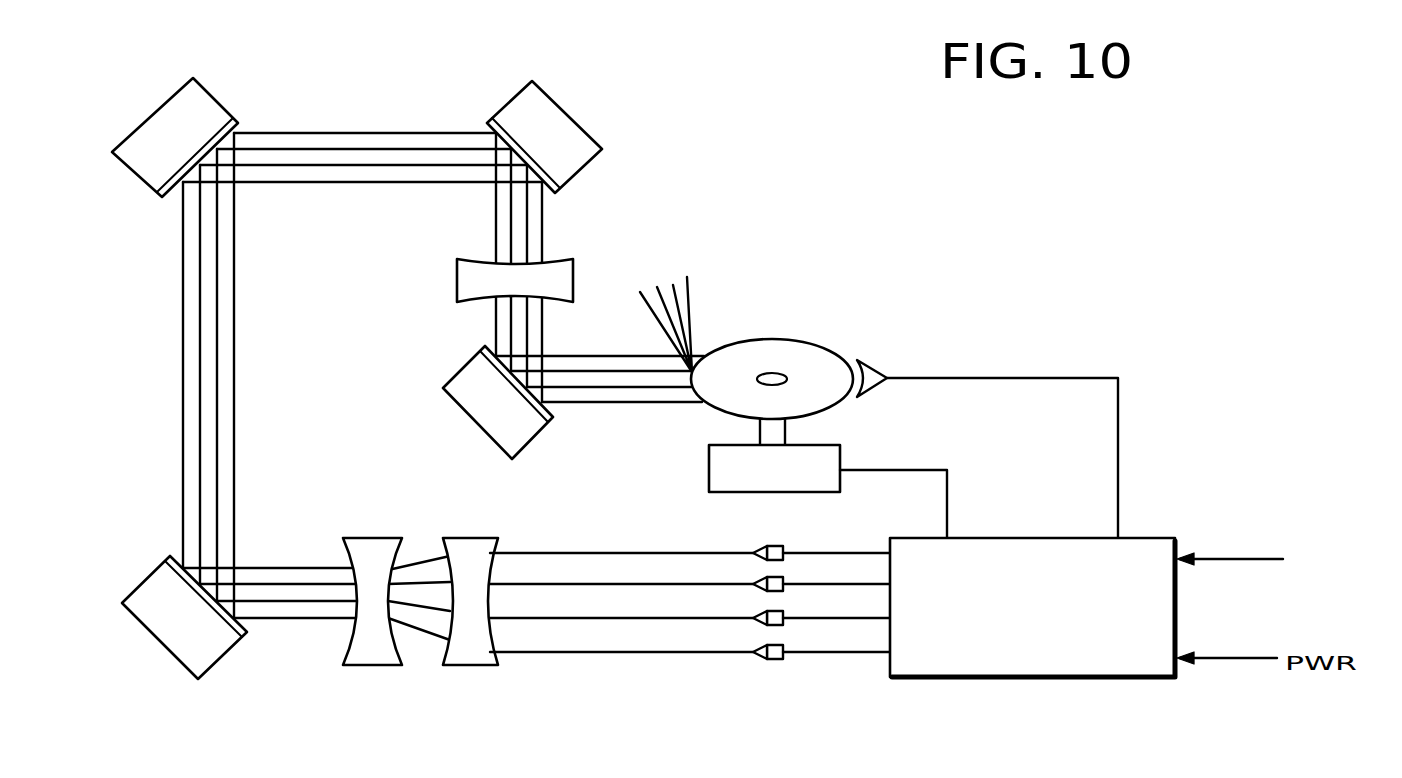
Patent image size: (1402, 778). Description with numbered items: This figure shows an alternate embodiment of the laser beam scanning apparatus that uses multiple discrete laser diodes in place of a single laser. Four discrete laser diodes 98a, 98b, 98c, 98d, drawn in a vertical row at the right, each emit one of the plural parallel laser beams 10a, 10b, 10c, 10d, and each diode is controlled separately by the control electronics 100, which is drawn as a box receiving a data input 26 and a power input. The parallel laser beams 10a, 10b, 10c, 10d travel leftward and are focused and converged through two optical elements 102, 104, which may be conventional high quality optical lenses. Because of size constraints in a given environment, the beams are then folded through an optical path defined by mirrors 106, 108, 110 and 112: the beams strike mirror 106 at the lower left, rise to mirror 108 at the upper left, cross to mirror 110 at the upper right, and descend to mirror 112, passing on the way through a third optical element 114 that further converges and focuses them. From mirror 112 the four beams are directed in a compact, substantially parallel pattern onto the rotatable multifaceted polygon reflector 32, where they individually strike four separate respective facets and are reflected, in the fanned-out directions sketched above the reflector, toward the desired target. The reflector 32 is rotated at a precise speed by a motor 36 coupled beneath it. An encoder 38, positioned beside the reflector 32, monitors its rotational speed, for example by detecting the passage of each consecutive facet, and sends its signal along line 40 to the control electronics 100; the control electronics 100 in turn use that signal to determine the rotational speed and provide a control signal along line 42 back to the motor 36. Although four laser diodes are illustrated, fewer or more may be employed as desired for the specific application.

The laser beam 10a is at (533, 550).
The laser beam 10b is at (528, 577).
The laser beam 10c is at (522, 613).
The laser beam 10d is at (523, 647).
The data input 26 is at (1240, 558).
The rotatable multifaceted polygon reflector 32 is at (807, 342).
The motor 36 is at (840, 447).
The encoder 38 is at (877, 367).
The line 40 is at (1120, 420).
The line 42 is at (947, 507).
The laser diode 98a is at (770, 547).
The laser diode 98b is at (783, 578).
The laser diode 98c is at (780, 613).
The laser diode 98d is at (783, 648).
The control electronics 100 is at (1172, 538).
The optical element 102 is at (467, 665).
The optical element 104 is at (368, 665).
The mirror 106 is at (172, 653).
The mirror 108 is at (157, 111).
The mirror 110 is at (565, 115).
The mirror 112 is at (468, 418).
The third optical element 114 is at (457, 274).